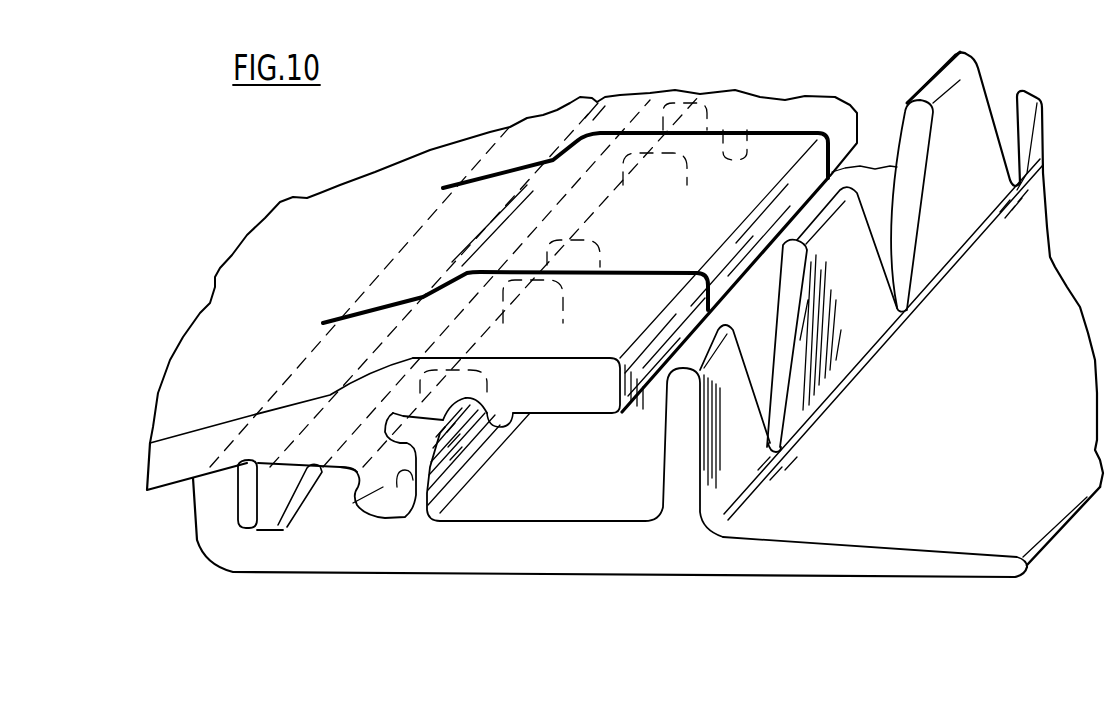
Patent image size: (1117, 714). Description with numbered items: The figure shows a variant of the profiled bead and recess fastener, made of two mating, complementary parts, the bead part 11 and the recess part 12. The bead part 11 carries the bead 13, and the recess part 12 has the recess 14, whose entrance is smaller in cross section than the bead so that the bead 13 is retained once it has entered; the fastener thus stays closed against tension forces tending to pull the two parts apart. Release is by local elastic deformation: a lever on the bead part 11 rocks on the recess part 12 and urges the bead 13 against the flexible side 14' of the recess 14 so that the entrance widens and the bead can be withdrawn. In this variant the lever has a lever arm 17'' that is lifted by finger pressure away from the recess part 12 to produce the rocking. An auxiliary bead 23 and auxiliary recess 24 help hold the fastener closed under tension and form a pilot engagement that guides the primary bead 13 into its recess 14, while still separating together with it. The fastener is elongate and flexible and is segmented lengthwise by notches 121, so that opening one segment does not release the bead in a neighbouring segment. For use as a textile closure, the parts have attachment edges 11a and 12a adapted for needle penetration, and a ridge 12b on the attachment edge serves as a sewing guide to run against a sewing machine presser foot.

The bead part 11 is at (393, 173).
The attachment edge 11a is at (163, 497).
The auxiliary bead 23 is at (250, 528).
The auxiliary recess 24 is at (305, 500).
The bead 13 is at (373, 490).
The recess 14 is at (391, 524).
The side of the recess 14' is at (473, 516).
The notches 121 is at (500, 432).
The lever arm 17'' is at (516, 496).
The recess part 12 is at (621, 560).
The attachment edge 12a is at (913, 532).
The ridge 12b is at (845, 283).